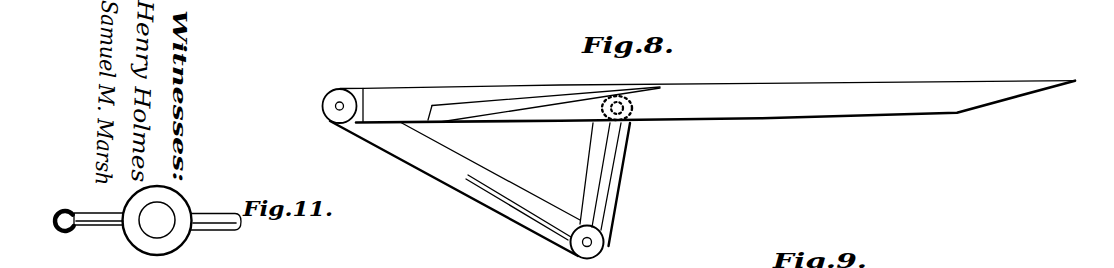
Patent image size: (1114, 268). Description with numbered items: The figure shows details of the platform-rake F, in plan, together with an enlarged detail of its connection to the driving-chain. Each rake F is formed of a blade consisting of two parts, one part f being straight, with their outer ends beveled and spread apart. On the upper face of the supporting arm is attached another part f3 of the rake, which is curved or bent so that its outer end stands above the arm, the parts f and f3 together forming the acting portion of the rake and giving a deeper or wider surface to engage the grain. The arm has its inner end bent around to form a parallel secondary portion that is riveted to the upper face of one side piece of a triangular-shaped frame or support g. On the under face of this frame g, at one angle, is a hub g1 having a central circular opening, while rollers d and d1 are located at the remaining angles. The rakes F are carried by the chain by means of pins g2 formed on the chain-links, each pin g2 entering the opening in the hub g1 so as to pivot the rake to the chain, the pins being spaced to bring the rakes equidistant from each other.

In FIG. 8, the roller d is at (322, 104).
In FIG. 8, the rake blade part f3 is at (497, 103).
In FIG. 8, the triangular-shaped frame or support g is at (455, 188).
In FIG. 8, the hub g1 is at (611, 184).
In FIG. 8, the roller d1 is at (605, 244).
In FIG. 8, the straight rake blade part f is at (829, 96).
In FIG. 11, the rake F is at (112, 195).
In FIG. 11, the pin g2 is at (157, 220).